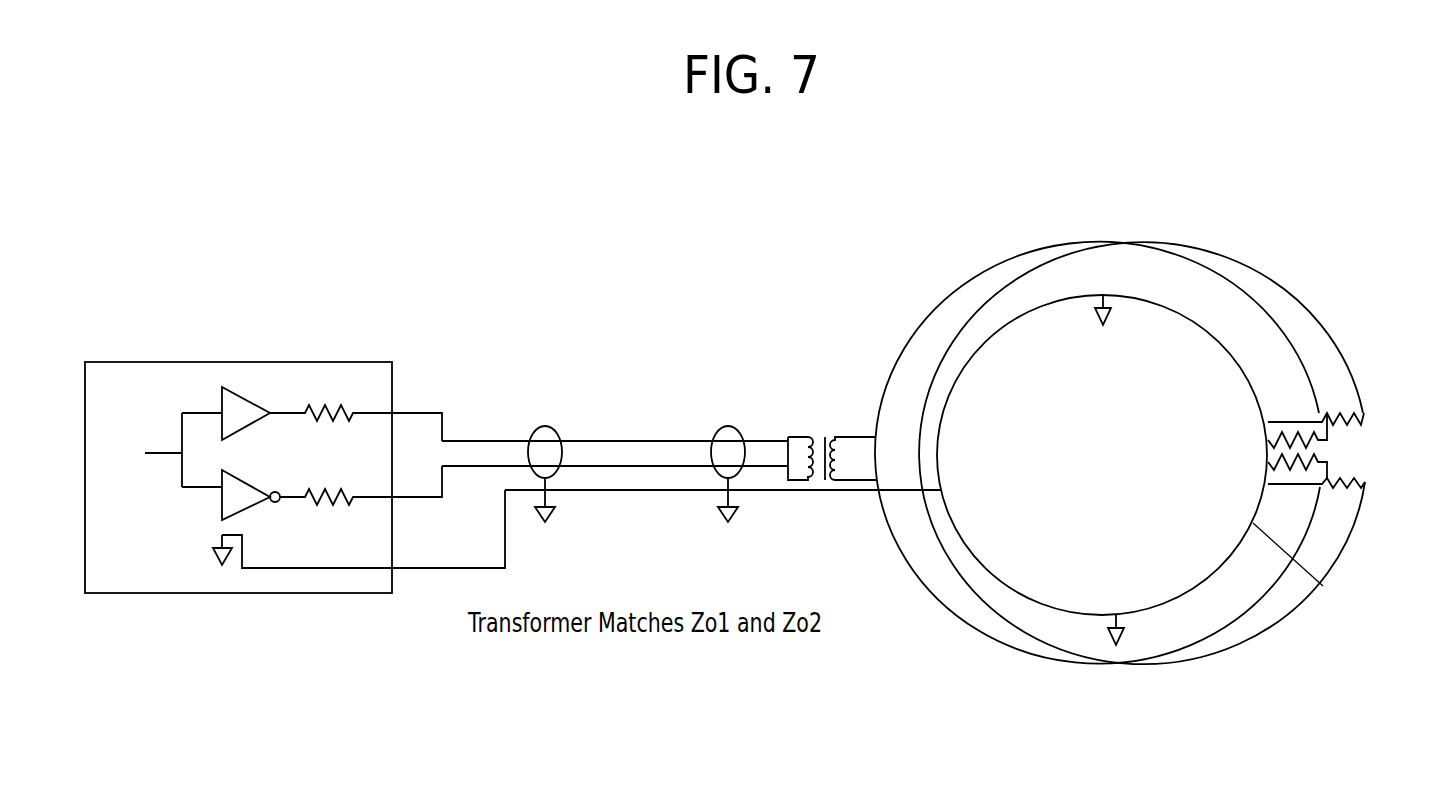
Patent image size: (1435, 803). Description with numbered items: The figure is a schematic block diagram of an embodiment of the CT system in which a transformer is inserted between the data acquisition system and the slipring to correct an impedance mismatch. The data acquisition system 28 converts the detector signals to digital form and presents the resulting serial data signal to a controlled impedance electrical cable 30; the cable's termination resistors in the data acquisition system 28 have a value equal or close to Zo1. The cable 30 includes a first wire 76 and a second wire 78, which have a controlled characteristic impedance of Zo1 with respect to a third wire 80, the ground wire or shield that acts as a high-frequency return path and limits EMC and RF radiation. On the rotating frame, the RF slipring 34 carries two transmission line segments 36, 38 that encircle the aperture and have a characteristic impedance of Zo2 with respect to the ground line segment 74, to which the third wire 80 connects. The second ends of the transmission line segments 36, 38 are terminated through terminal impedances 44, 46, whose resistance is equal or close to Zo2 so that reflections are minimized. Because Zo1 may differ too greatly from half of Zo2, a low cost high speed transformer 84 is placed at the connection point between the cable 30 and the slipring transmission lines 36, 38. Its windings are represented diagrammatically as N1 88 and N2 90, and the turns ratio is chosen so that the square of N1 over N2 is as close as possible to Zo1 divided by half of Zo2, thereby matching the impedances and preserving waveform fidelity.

The data acquisition system 28 is at (242, 363).
The controlled impedance electrical cable 30 is at (585, 340).
The RF slipring 34 is at (1283, 622).
The transmission line segment 36 is at (958, 620).
The transmission line segment 38 is at (1040, 641).
The terminal impedance 44 is at (1340, 402).
The terminal impedance 46 is at (1345, 492).
The line segment 74 is at (1323, 586).
The first wire 76 is at (466, 440).
The second wire 78 is at (466, 470).
The third wire 80 is at (793, 495).
The transformer 84 is at (829, 444).
The N1 88 is at (796, 400).
The N2 90 is at (850, 400).